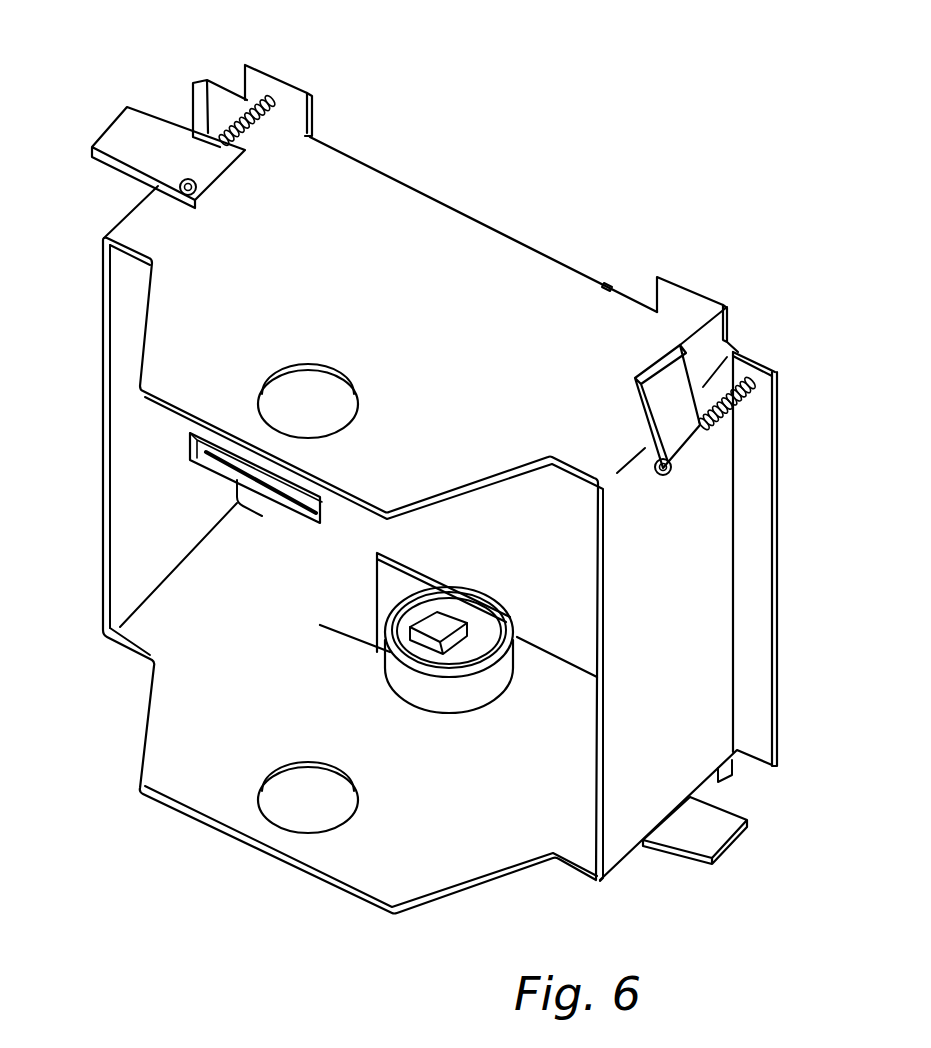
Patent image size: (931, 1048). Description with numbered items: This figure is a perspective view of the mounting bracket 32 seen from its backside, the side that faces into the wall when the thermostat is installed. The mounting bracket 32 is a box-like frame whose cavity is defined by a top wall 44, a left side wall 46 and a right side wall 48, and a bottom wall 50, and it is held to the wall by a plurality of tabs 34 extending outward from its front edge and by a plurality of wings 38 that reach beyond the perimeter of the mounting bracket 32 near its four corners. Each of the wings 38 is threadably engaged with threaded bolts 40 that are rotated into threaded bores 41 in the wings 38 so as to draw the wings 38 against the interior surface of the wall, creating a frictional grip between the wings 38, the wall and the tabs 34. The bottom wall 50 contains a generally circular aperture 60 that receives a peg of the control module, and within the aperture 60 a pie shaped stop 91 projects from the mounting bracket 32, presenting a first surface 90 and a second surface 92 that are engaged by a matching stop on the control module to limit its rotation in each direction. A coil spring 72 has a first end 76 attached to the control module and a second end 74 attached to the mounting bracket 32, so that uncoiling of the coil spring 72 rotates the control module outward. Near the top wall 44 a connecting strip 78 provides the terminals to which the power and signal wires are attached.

The mounting bracket 32 is at (128, 679).
The tabs 34 is at (292, 92).
The wings 38 is at (138, 125).
The threaded bolts 40 is at (223, 130).
The threaded bores 41 is at (177, 190).
The top wall 44 is at (375, 205).
The left side wall 46 is at (690, 600).
The right side wall 48 is at (150, 472).
The bottom wall 50 is at (215, 765).
The aperture 60 is at (425, 655).
The coil spring 72 is at (455, 690).
The second end 74 is at (395, 550).
The first end 76 is at (318, 622).
The connecting strip 78 is at (192, 440).
The first surface 90 is at (438, 660).
The pie shaped stop 91 is at (435, 612).
The second surface 92 is at (500, 627).